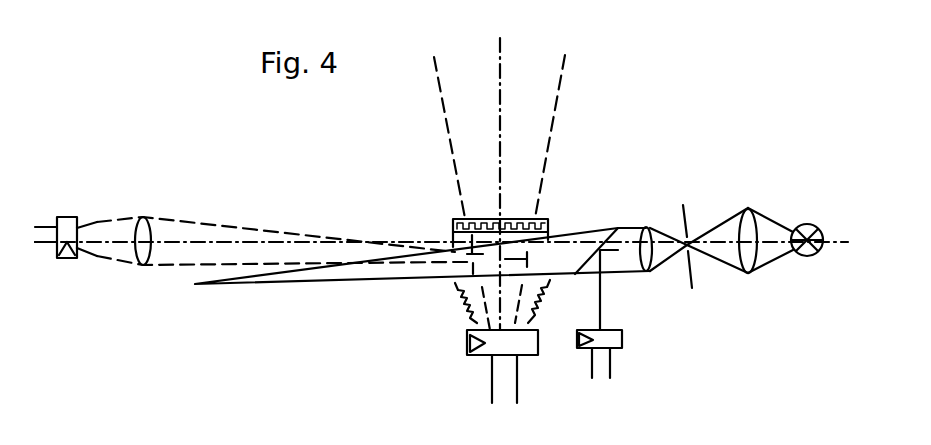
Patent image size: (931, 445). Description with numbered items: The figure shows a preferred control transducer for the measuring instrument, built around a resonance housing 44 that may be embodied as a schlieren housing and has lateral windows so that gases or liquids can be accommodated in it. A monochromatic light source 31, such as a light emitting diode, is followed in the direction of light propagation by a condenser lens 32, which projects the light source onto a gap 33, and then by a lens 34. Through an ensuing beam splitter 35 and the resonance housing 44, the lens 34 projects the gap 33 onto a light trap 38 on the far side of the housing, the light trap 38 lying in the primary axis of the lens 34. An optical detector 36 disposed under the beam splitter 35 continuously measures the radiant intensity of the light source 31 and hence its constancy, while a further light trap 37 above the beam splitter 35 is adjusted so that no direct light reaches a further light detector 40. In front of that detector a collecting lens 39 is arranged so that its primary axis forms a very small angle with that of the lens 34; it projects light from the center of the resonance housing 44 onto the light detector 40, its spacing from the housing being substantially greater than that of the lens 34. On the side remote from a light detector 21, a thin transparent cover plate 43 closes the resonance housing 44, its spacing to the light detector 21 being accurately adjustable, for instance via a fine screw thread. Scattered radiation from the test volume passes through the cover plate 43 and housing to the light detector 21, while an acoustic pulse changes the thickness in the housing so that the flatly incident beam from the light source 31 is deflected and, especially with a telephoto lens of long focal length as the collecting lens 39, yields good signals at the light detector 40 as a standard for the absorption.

The light detector 21 is at (497, 344).
The monochromatic light source 31 is at (785, 233).
The condenser lens 32 is at (725, 227).
The gap 33 is at (682, 233).
The lens 34 is at (659, 234).
The beam splitter 35 is at (610, 263).
The optical detector 36 is at (611, 358).
The further light trap 37 is at (582, 225).
The light trap 38 is at (195, 292).
The collecting lens 39 is at (285, 232).
The light detector 40 is at (66, 224).
The transparent cover plate 43 is at (487, 162).
The resonance housing 44 is at (489, 301).